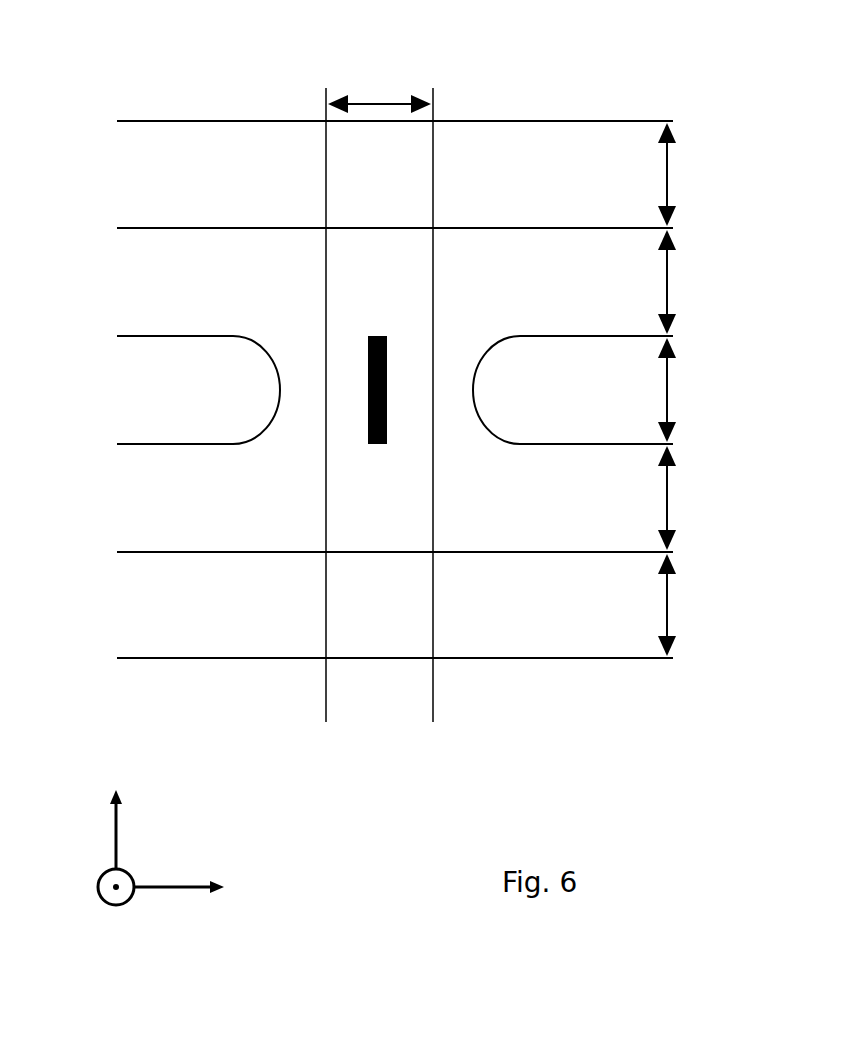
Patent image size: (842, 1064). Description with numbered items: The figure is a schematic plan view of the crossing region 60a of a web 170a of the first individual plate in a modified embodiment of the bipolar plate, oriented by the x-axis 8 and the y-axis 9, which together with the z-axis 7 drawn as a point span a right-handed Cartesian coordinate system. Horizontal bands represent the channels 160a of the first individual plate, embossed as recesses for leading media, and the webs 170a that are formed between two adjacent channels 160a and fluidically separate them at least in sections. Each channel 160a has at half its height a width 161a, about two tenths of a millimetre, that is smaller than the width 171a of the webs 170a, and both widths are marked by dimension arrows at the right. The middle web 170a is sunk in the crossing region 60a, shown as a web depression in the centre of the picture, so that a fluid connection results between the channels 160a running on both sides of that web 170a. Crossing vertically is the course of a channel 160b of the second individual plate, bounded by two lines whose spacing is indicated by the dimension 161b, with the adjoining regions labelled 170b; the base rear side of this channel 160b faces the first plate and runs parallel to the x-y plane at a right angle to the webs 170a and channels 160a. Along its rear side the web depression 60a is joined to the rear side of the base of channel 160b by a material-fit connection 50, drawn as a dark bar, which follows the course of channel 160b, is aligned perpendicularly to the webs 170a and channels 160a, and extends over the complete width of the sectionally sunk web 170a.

The web 170a is at (395, 389).
The channel 160a is at (559, 391).
The second electrode portions 170b is at (373, 700).
The channel of the second individual plate 160b is at (379, 405).
The width of the web 171a is at (670, 181).
The width of the channel 161a is at (670, 290).
The width of second gap portion 161b is at (385, 100).
The material-fit connection 50 is at (387, 381).
The crossing region 60a is at (338, 428).
The z axis 7 is at (116, 906).
The x-axis 8 is at (158, 884).
The y-axis 9 is at (118, 840).